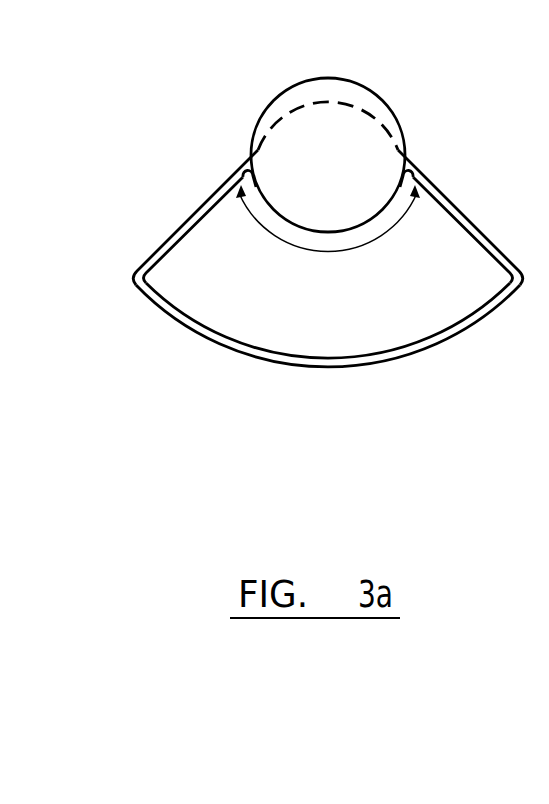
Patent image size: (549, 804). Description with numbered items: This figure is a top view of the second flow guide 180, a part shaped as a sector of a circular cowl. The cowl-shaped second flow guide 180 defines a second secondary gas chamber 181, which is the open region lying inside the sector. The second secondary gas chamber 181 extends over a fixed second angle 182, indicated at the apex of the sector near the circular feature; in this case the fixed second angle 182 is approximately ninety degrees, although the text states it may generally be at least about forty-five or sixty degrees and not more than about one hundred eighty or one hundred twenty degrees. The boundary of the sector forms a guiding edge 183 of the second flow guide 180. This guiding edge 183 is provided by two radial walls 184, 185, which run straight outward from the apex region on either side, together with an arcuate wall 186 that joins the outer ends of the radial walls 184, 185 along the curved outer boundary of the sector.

The second flow guide 180 is at (318, 288).
The second secondary gas chamber 181 is at (323, 313).
The fixed second angle 182 is at (355, 250).
The guiding edge 183 is at (257, 362).
The radial wall 184 is at (459, 213).
The radial wall 185 is at (203, 206).
The arcuate wall 186 is at (329, 362).